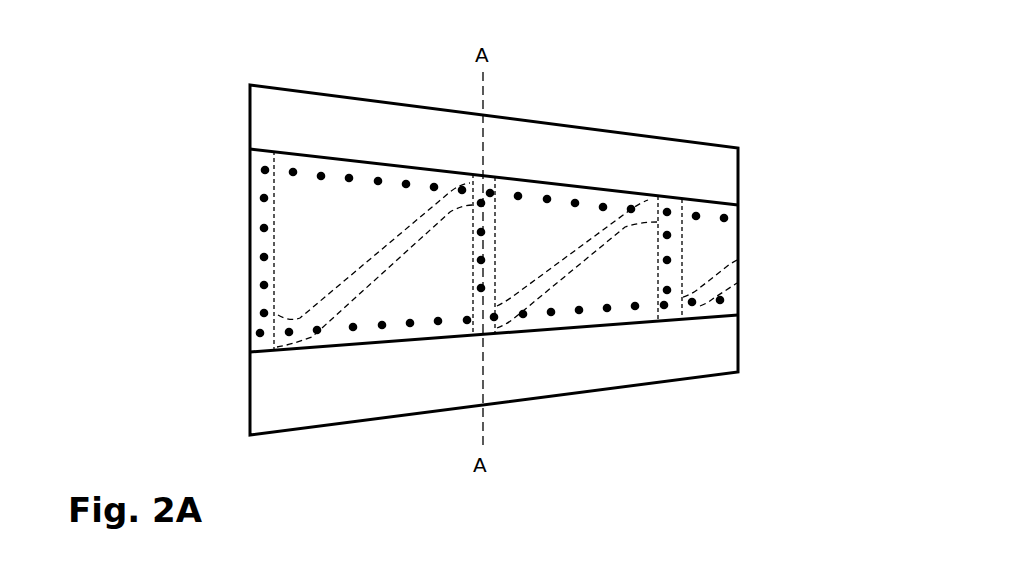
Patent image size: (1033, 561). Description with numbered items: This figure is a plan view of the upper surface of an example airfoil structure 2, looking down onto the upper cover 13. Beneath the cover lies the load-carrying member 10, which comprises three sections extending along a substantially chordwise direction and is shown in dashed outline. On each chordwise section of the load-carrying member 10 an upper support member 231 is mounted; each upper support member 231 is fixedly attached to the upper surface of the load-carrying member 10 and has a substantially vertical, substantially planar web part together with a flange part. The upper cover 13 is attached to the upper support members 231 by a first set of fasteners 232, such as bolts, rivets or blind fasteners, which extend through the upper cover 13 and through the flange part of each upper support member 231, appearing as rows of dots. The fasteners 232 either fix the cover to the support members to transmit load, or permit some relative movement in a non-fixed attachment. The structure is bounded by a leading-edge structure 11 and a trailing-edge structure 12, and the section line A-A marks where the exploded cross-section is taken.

The airfoil structure 2 is at (172, 130).
The load-carrying member 10 is at (367, 278).
The upper flange 11 is at (390, 126).
The lower flange 12 is at (297, 393).
The upper cover 13 is at (697, 245).
The upper support member 231 is at (258, 215).
The fasteners 232 is at (262, 256).